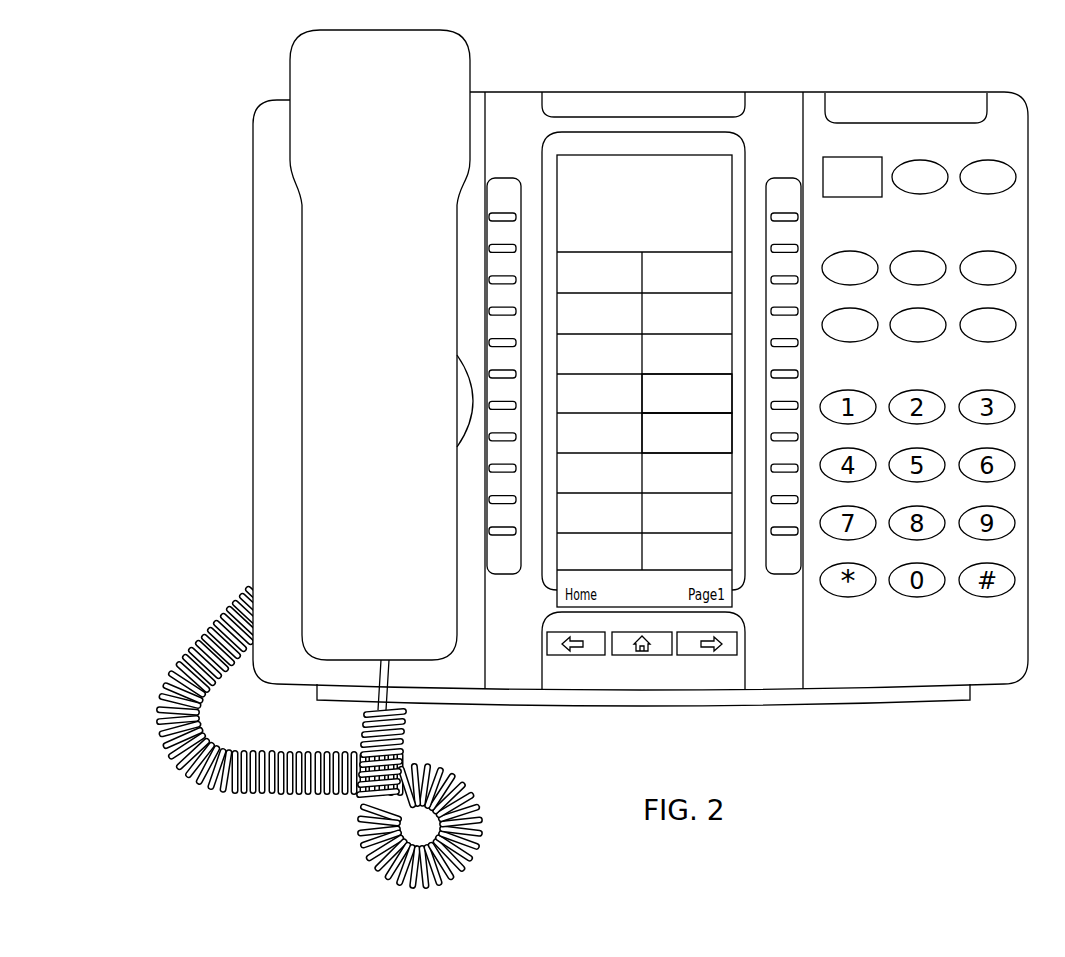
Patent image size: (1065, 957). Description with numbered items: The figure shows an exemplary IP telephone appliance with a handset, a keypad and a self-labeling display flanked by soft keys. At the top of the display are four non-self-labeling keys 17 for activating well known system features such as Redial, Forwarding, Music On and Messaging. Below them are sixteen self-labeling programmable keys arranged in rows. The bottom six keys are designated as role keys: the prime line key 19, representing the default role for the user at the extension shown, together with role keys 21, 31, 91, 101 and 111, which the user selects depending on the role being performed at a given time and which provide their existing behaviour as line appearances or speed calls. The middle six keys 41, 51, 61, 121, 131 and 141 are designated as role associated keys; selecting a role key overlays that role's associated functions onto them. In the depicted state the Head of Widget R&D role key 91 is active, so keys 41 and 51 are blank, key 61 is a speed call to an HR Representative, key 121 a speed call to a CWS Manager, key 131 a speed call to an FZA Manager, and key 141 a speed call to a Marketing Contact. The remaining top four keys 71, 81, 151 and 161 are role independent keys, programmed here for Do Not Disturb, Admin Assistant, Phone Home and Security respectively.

The non-self-labeling keys 17 is at (560, 205).
The role independent key 161 is at (565, 268).
The role independent key 151 is at (565, 300).
The role associated key 141 is at (565, 354).
The role associated key 131 is at (565, 384).
The role associated key 121 is at (563, 427).
The role key 111 is at (565, 474).
The role key 101 is at (560, 512).
The role key 91 is at (573, 558).
The role independent key 81 is at (715, 272).
The role independent key 71 is at (718, 316).
The role associated key 61 is at (717, 347).
The role associated key 51 is at (722, 404).
The role associated key 41 is at (720, 445).
The role key 31 is at (722, 476).
The role key 21 is at (735, 522).
The prime line key 19 is at (722, 552).